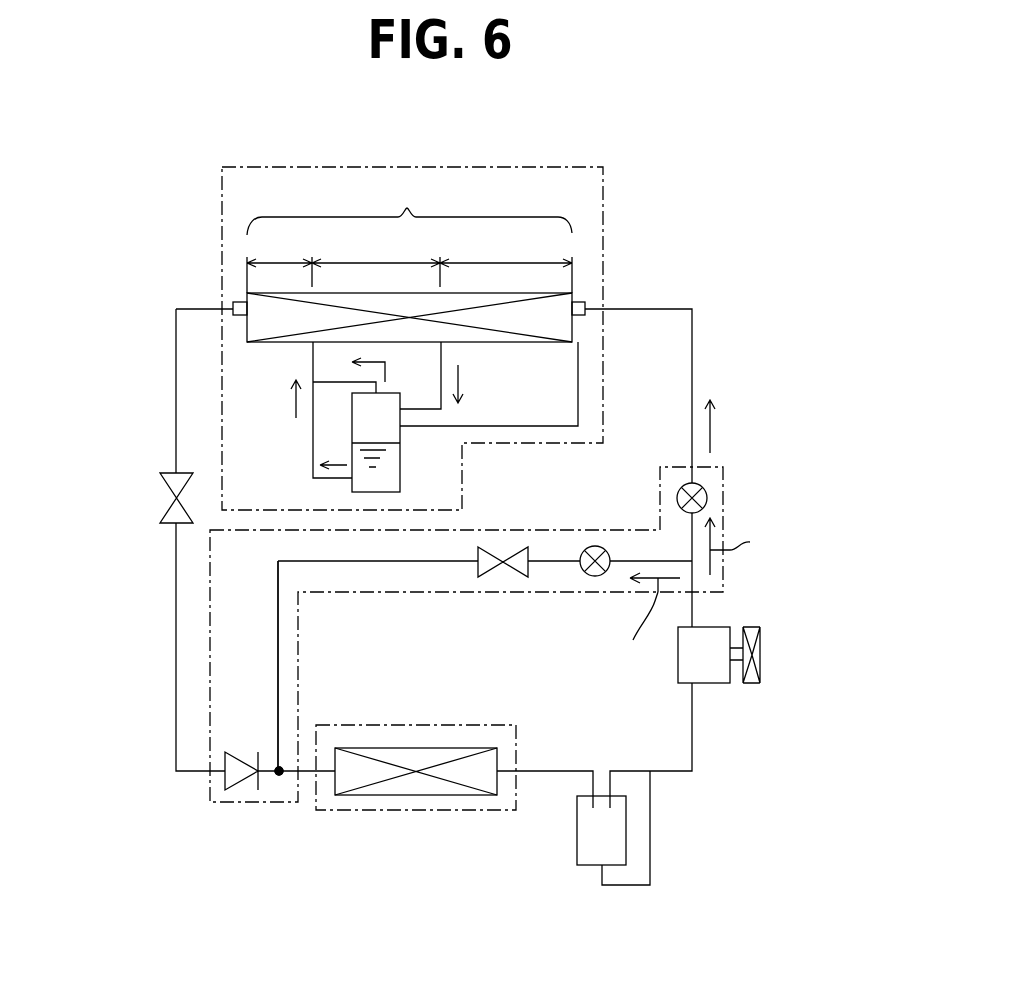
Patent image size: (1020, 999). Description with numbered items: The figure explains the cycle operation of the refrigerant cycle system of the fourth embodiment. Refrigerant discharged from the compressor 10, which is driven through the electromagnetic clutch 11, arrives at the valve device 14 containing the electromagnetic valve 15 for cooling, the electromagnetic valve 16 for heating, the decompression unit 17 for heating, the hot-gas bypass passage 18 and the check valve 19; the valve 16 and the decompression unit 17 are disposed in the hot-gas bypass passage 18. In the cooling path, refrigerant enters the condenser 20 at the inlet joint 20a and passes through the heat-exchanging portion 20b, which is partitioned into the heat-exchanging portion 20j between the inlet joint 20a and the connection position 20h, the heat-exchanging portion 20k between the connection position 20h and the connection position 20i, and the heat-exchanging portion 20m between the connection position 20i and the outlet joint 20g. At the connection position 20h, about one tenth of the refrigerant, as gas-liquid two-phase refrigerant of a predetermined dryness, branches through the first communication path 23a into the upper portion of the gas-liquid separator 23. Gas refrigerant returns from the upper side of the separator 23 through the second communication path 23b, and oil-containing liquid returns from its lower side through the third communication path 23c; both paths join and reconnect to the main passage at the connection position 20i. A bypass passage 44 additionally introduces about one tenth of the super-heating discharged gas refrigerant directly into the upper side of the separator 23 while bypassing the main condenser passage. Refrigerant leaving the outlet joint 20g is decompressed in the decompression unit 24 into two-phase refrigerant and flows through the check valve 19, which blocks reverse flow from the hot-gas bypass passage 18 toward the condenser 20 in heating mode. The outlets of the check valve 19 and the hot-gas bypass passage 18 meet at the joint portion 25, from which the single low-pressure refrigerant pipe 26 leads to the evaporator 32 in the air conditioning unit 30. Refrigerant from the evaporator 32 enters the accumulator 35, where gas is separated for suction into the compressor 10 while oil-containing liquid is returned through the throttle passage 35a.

The compressor 10 is at (712, 683).
The electromagnetic clutch 11 is at (753, 627).
The valve device 14 is at (532, 601).
The electromagnetic valve for cooling 15 is at (707, 490).
The electromagnetic valve for heating 16 is at (594, 577).
The decompression unit for heating 17 is at (506, 578).
The hot-gas bypass passage 18 is at (405, 562).
The check valve 19 is at (225, 787).
The condenser 20 is at (425, 334).
The inlet joint 20a is at (583, 300).
The heat-exchanging portion 20b is at (409, 260).
The outlet joint 20g is at (236, 300).
The connection position 20h is at (441, 343).
The connection position 20i is at (313, 343).
The heat-exchanging portion 20j is at (506, 260).
The heat-exchanging portion 20k is at (376, 257).
The heat-exchanging portion 20m is at (279, 260).
The gas-liquid separator 23 is at (392, 476).
The first communication path 23a is at (441, 365).
The second communication path 23b is at (338, 381).
The third communication path 23c is at (313, 435).
The decompression unit 24 is at (163, 512).
The joint portion 25 is at (278, 778).
The low-pressure refrigerant pipe 26 is at (307, 776).
The air conditioning unit 30 is at (434, 803).
The evaporator 32 is at (415, 797).
The accumulator 35 is at (626, 819).
The throttle passage 35a is at (650, 870).
The bypass passage 44 is at (578, 393).